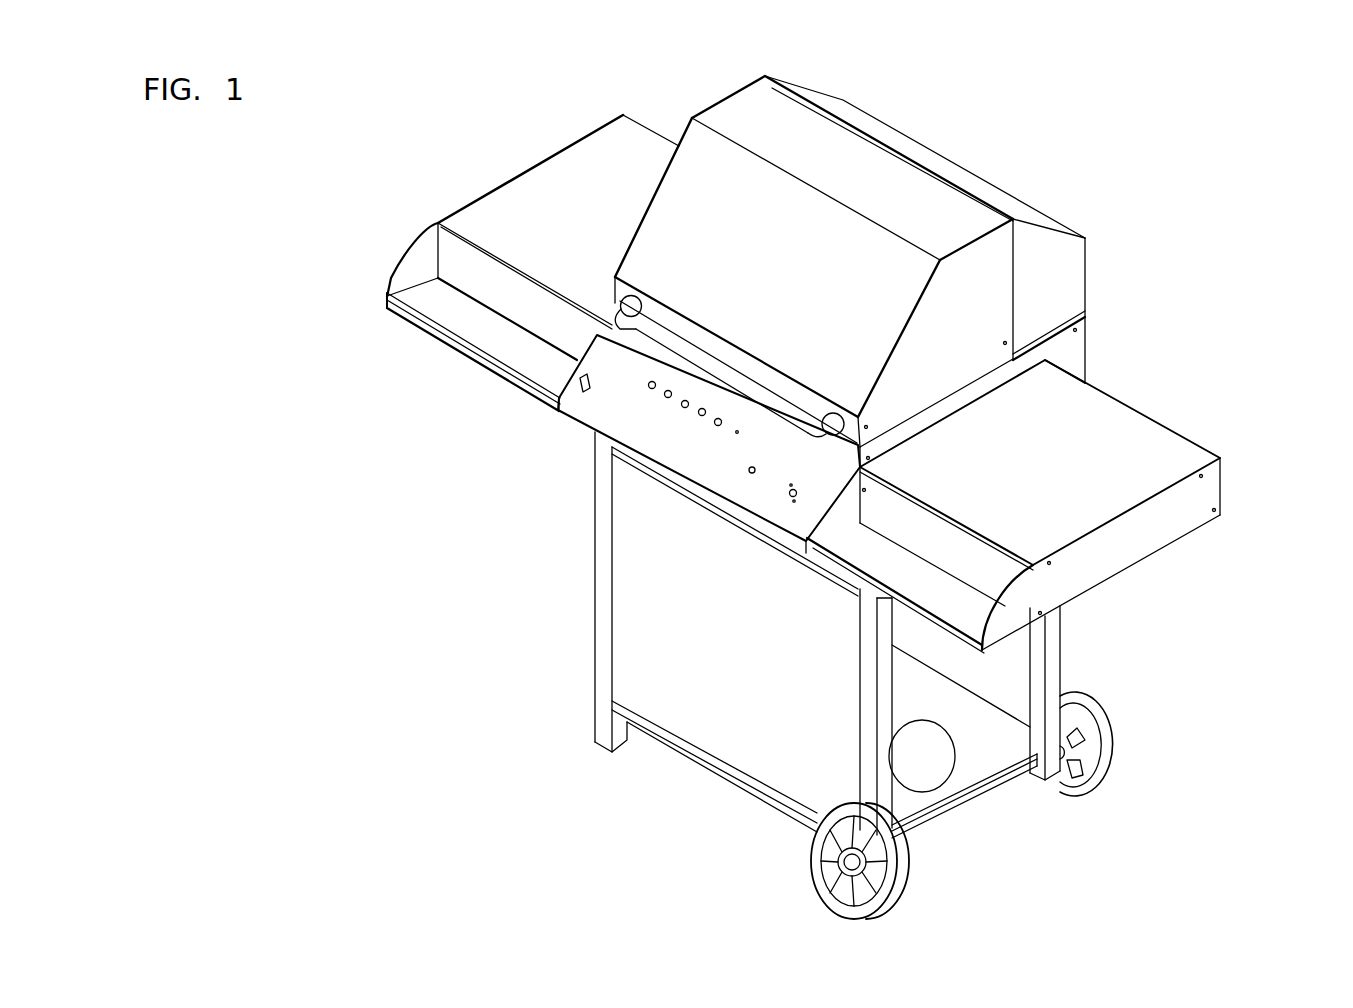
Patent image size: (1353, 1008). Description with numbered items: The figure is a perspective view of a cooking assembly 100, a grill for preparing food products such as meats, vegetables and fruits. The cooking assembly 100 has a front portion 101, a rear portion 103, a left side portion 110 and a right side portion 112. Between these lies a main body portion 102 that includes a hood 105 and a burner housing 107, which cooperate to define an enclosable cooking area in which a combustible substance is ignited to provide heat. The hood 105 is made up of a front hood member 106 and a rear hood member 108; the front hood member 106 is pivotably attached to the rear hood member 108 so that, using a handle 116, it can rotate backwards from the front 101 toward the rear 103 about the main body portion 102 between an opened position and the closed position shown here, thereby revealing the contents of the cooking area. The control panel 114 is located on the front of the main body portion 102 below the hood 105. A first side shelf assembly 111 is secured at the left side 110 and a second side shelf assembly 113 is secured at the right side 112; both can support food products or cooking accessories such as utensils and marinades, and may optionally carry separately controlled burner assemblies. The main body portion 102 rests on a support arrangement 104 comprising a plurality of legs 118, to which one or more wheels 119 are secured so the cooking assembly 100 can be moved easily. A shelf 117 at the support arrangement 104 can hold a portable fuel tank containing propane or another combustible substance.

The cooking assembly 100 is at (1177, 190).
The front portion 101 is at (427, 573).
The main body portion 102 is at (1134, 315).
The rear portion 103 is at (1068, 157).
The support arrangement 104 is at (541, 637).
The hood 105 is at (700, 103).
The front hood member 106 is at (676, 216).
The burner housing 107 is at (967, 397).
The rear hood member 108 is at (933, 160).
The left side portion 110 is at (424, 163).
The first side shelf assembly 111 is at (513, 243).
The right side portion 112 is at (1207, 598).
The second side shelf assembly 113 is at (1172, 452).
The control panel 114 is at (605, 395).
The handle 116 is at (707, 369).
The shelf 117 is at (920, 812).
The legs 118 is at (604, 677).
The wheels 119 is at (832, 888).